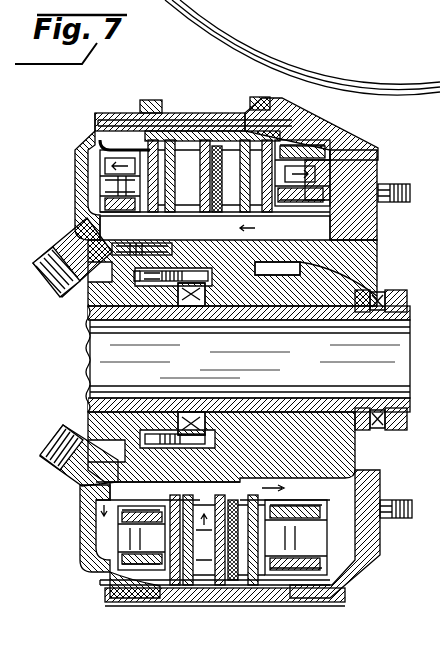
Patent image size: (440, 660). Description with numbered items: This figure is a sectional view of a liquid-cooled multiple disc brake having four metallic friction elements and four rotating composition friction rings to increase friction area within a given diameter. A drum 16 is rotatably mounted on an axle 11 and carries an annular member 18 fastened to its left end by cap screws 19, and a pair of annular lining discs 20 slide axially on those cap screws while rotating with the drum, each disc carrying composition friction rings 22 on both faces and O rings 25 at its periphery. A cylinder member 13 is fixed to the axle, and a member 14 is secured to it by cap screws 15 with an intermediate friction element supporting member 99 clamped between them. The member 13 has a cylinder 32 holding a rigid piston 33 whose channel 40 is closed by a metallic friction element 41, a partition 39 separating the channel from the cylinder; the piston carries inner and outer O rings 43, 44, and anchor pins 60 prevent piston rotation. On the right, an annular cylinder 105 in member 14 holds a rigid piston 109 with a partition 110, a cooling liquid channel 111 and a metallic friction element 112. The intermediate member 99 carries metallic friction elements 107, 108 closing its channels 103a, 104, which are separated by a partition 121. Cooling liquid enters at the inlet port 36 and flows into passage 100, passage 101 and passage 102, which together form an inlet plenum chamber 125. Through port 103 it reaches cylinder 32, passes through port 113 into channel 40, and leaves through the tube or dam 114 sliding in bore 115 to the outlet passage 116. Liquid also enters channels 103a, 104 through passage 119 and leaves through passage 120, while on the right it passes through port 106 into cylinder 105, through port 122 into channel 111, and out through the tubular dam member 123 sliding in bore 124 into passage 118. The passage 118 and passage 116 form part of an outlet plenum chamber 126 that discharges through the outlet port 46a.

The axle 11 is at (407, 300).
The cylinder member 13 is at (96, 190).
The member 14 is at (232, 273).
The cap screws 15 is at (250, 268).
The drum 16 is at (366, 152).
The annular member 18 is at (118, 113).
The cap screws 19 is at (95, 116).
The annular lining discs 20 is at (160, 100).
The composition friction rings 22 is at (200, 128).
The O rings 25 is at (176, 140).
The cylinder 32 is at (100, 148).
The rigid piston 33 is at (134, 247).
The inlet port 36 is at (46, 438).
The partition 39 is at (120, 530).
The channel 40 is at (124, 560).
The metallic friction element 41 is at (176, 271).
The inner O ring 43 is at (215, 216).
The outer O ring 44 is at (310, 136).
The outlet port 46a is at (45, 290).
The anchor pins 60 is at (409, 191).
The intermediate friction element supporting member 99 is at (202, 300).
The passage 100 is at (166, 501).
The passage 101 is at (224, 501).
The passage 102 is at (322, 495).
The port 103 is at (135, 540).
The channel 103a is at (211, 248).
The channel 104 is at (262, 245).
The annular cylinder 105 is at (335, 566).
The port 106 is at (300, 530).
The metallic friction element 107 is at (225, 87).
The metallic friction element 108 is at (232, 131).
The rigid piston 109 is at (330, 498).
The partition 110 is at (310, 518).
The cooling liquid channel 111 is at (345, 588).
The metallic friction element 112 is at (214, 236).
The port 113 is at (112, 576).
The tube or dam 114 is at (104, 180).
The bore 115 is at (100, 194).
The outlet passage 116 is at (172, 236).
The passage 118 is at (314, 236).
The passage 119 is at (217, 540).
The passage 120 is at (218, 214).
The partition 121 is at (216, 545).
The port 122 is at (290, 540).
The tubular dam member 123 is at (330, 138).
The bore 124 is at (352, 140).
The inlet plenum chamber 125 is at (96, 501).
The outlet plenum chamber 126 is at (104, 166).